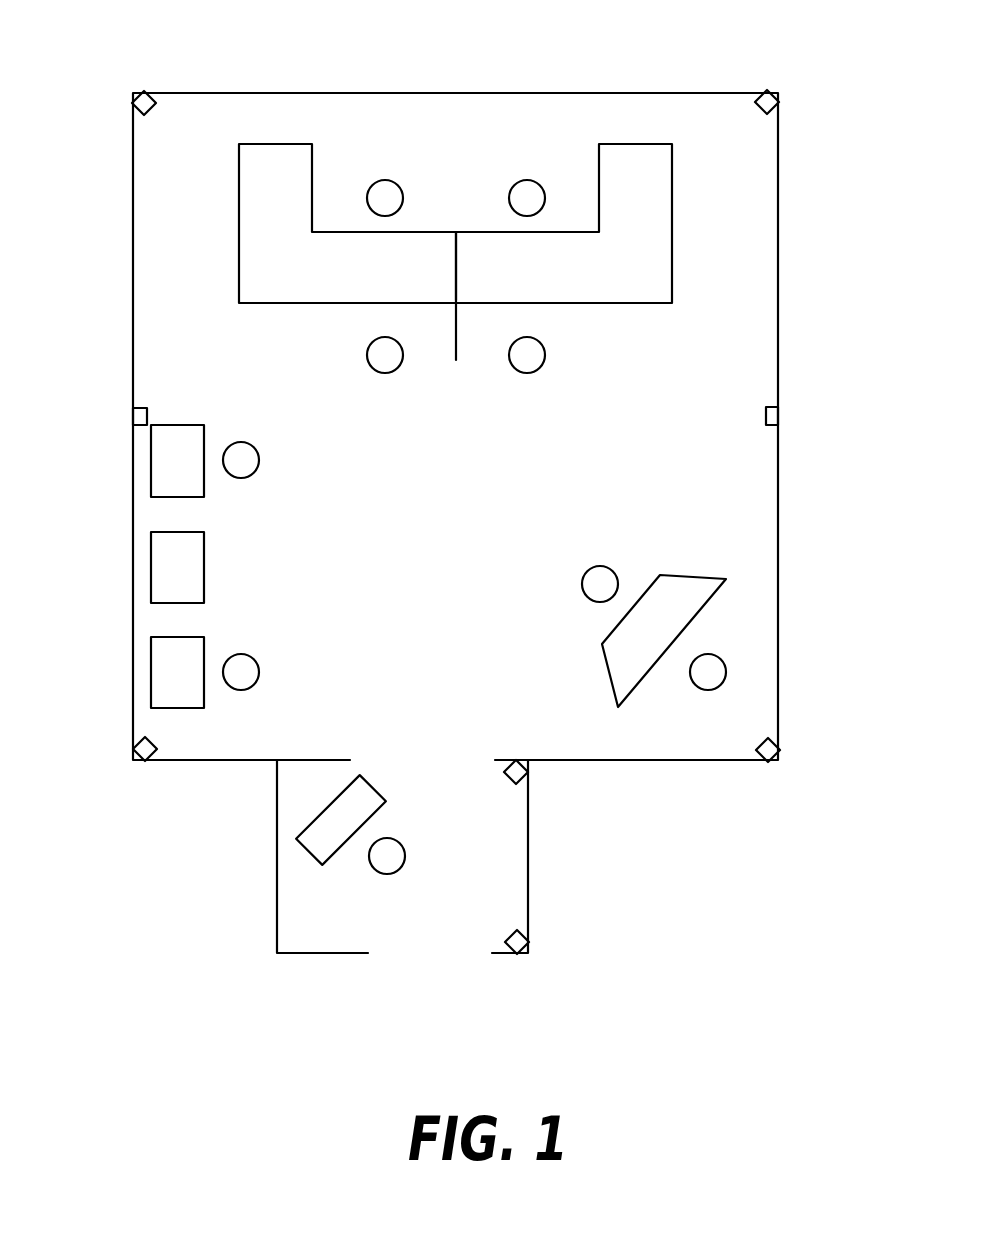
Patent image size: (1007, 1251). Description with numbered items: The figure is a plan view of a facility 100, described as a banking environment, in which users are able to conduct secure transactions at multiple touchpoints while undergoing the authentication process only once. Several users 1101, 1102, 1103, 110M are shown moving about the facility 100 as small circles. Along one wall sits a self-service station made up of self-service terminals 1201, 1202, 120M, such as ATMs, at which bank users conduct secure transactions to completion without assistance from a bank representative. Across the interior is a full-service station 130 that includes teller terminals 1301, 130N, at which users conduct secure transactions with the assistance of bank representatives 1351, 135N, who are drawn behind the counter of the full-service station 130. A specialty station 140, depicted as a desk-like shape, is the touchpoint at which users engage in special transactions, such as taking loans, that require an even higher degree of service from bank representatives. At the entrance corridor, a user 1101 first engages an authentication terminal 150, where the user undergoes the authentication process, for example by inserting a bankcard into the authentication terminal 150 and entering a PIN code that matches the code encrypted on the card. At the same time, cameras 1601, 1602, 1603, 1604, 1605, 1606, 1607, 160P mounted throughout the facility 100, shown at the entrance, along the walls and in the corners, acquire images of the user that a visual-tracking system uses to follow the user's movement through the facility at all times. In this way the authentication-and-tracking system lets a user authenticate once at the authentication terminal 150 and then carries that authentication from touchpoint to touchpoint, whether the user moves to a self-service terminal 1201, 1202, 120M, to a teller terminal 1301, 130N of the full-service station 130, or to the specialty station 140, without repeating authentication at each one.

The facility 100 is at (548, 58).
The user 1101 is at (400, 870).
The user 1102 is at (255, 685).
The user 1103 is at (540, 369).
The user 110M is at (589, 598).
The self-service terminal 1201 is at (151, 478).
The self-service terminal 1202 is at (151, 593).
The self-service terminal 120M is at (151, 690).
The full-service station 130 is at (672, 231).
The teller terminal 1301 is at (410, 296).
The teller terminal 130N is at (507, 266).
The bank representative 1351 is at (393, 182).
The bank representative 135N is at (534, 183).
The specialty station 140 is at (606, 661).
The authentication terminal 150 is at (300, 839).
The camera 1601 is at (530, 950).
The camera 1602 is at (528, 775).
The camera 1603 is at (135, 762).
The camera 1604 is at (133, 413).
The camera 1605 is at (133, 95).
The camera 1606 is at (778, 93).
The camera 1607 is at (778, 415).
The camera 160P is at (780, 752).